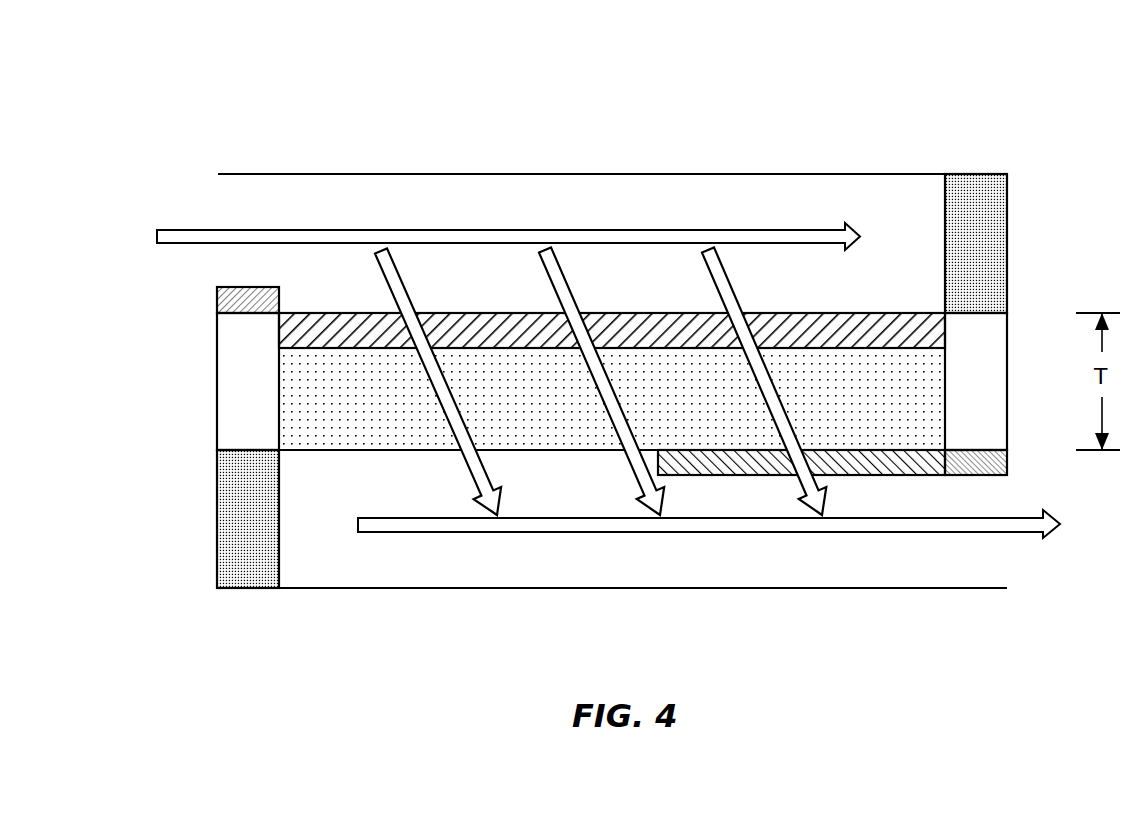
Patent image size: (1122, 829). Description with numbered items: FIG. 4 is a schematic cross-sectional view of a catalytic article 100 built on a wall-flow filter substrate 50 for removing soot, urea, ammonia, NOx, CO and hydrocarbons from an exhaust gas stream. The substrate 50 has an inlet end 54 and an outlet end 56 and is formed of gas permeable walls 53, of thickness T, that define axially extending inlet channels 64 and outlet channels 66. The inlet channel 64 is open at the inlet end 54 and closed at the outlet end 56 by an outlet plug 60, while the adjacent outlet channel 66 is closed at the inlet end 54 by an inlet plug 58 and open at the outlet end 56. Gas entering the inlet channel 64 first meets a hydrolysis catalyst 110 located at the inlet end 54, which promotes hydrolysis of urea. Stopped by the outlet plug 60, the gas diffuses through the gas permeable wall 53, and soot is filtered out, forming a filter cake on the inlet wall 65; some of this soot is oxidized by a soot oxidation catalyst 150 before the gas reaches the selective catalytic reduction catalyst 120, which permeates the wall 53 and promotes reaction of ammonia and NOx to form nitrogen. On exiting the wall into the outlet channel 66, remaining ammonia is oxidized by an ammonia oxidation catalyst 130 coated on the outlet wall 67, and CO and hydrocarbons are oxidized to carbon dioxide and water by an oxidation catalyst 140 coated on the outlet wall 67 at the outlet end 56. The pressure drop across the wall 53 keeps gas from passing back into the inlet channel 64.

The catalytic article 100 is at (644, 100).
The inlet end 54 is at (170, 180).
The outlet end 56 is at (1043, 558).
The inlet channel 64 is at (508, 220).
The outlet channel 66 is at (690, 539).
The substrate 50 is at (216, 380).
The hydrolysis catalyst 110 is at (237, 293).
The inlet plug 58 is at (232, 517).
The outlet plug 60 is at (1000, 245).
The gas permeable wall 53 is at (1018, 381).
The oxidation catalyst 140 is at (1000, 458).
The soot oxidation catalyst 150 is at (870, 322).
The inlet wall 65 is at (366, 313).
The selective catalytic reduction catalyst 120 is at (821, 373).
The outlet wall 67 is at (405, 450).
The ammonia oxidation catalyst 130 is at (893, 462).